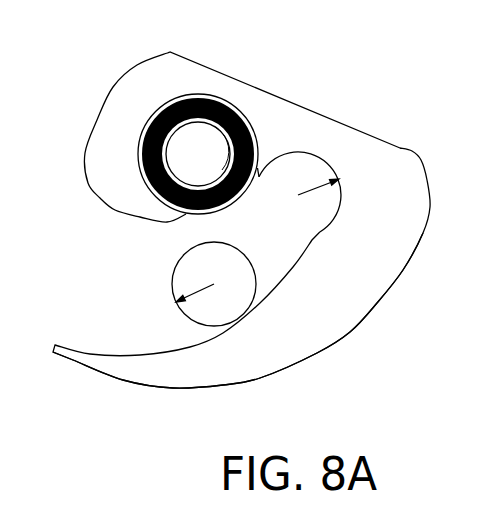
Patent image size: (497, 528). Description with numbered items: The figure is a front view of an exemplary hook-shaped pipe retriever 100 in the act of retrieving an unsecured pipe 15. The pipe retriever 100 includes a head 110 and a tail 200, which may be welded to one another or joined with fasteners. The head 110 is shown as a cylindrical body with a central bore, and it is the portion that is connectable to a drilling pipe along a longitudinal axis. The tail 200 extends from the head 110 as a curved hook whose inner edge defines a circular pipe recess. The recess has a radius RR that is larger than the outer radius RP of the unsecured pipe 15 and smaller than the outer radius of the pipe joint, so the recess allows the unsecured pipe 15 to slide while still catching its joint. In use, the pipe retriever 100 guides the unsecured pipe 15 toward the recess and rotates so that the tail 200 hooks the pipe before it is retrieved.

The pipe retriever 100 is at (179, 45).
The head 110 is at (236, 108).
The unsecured pipe 15 is at (174, 268).
The radius of the pipe recess RR is at (340, 178).
The outer radius of the unsecured pipe RP is at (176, 302).
The tail 200 is at (348, 332).